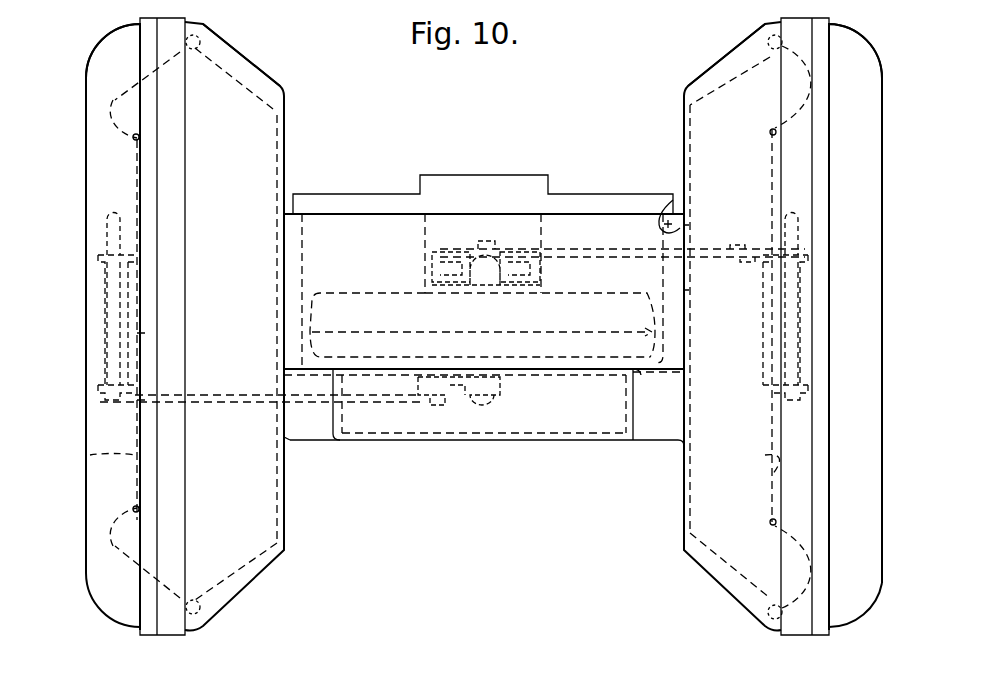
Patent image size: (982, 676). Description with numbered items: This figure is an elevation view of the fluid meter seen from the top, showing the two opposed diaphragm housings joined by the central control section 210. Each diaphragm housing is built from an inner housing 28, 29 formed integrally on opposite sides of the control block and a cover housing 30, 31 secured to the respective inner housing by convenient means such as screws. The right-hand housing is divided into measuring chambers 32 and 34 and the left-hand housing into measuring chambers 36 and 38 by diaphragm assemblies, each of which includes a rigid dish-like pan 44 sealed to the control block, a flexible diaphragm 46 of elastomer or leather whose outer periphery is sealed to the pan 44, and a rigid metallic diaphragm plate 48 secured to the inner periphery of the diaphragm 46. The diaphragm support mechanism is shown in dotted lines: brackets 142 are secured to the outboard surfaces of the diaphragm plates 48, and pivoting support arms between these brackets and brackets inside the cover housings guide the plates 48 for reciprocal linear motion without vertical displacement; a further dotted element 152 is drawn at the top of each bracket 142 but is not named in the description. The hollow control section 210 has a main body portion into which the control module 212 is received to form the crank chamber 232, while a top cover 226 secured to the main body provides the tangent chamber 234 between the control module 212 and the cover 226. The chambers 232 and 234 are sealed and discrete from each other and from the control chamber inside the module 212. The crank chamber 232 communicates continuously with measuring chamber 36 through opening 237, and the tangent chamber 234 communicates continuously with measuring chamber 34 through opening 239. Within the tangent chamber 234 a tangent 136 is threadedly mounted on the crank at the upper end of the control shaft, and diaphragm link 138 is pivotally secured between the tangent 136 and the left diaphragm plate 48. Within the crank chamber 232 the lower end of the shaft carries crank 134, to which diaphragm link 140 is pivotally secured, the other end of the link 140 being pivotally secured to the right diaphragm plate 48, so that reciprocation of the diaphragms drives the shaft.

The inner housing 28 is at (738, 50).
The inner housing 29 is at (235, 48).
The cover housing 30 is at (872, 42).
The cover housing 31 is at (98, 42).
The measuring chamber 32 is at (866, 337).
The measuring chamber 34 is at (734, 379).
The measuring chamber 36 is at (236, 290).
The measuring chamber 38 is at (103, 490).
The pan 44 is at (245, 95).
The diaphragm 46 is at (110, 105).
The diaphragm plate 48 is at (90, 455).
The crank 134 is at (462, 404).
The tangent 136 is at (446, 248).
The diaphragm link 138 is at (630, 255).
The diaphragm link 140 is at (254, 406).
The bracket 142 is at (100, 268).
The latch pin 152 is at (105, 215).
The control section 210 is at (544, 325).
The control module 212 is at (385, 287).
The top cover 226 is at (358, 198).
The crank chamber 232 is at (580, 414).
The tangent chamber 234 is at (628, 284).
The opening 237 is at (313, 430).
The opening 239 is at (664, 198).